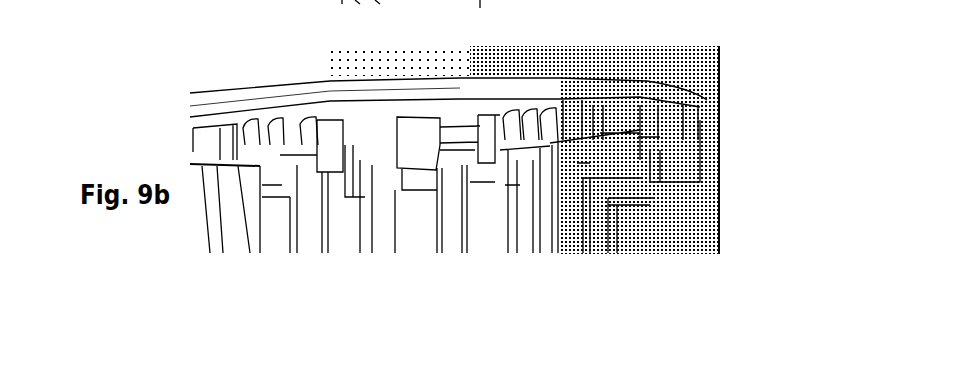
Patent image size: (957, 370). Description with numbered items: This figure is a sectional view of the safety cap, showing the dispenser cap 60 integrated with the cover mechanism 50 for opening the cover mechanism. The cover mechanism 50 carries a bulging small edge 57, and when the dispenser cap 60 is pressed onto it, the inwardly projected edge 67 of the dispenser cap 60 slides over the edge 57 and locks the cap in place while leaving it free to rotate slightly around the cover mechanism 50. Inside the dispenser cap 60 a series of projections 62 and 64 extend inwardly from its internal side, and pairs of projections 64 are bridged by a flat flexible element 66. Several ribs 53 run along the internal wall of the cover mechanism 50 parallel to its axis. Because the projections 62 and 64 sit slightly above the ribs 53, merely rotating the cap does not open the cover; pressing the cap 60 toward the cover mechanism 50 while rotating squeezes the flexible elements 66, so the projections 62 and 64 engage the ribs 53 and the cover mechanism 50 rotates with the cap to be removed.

The cover mechanism 50 is at (617, 225).
The ribs 53 is at (377, 153).
The bulging small edge 57 is at (657, 142).
The dispenser cap 60 is at (647, 81).
The projections 62 is at (432, 270).
The projections 64 is at (325, 58).
The flat flexible element 66 is at (273, 167).
The inwardly projected edge 67 is at (662, 170).